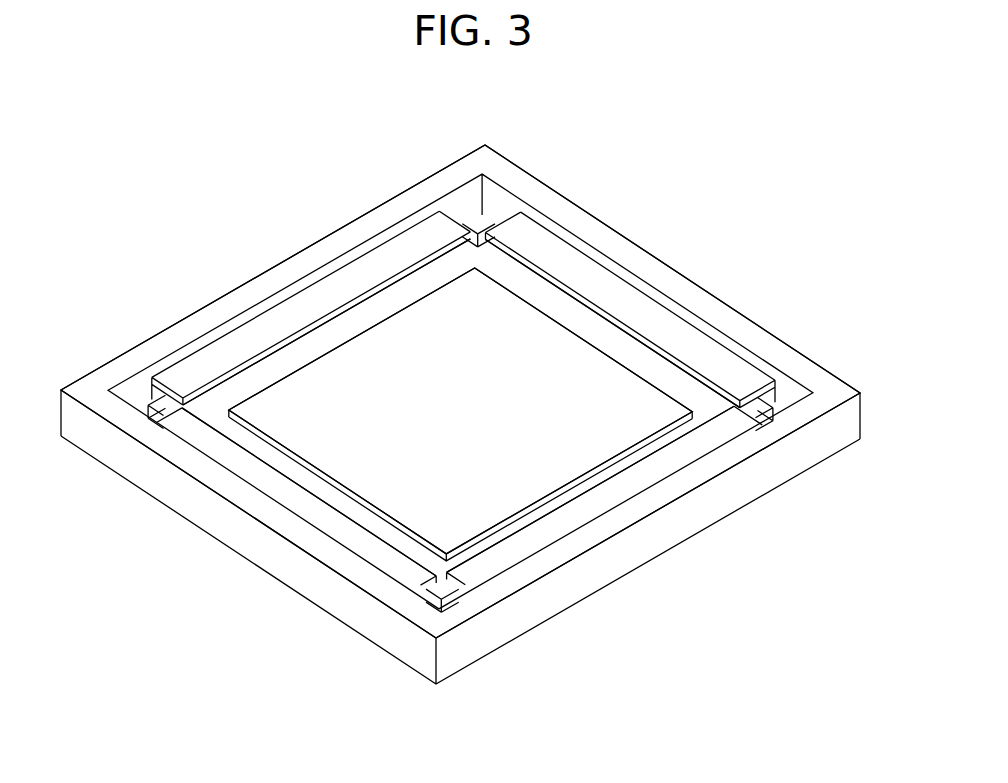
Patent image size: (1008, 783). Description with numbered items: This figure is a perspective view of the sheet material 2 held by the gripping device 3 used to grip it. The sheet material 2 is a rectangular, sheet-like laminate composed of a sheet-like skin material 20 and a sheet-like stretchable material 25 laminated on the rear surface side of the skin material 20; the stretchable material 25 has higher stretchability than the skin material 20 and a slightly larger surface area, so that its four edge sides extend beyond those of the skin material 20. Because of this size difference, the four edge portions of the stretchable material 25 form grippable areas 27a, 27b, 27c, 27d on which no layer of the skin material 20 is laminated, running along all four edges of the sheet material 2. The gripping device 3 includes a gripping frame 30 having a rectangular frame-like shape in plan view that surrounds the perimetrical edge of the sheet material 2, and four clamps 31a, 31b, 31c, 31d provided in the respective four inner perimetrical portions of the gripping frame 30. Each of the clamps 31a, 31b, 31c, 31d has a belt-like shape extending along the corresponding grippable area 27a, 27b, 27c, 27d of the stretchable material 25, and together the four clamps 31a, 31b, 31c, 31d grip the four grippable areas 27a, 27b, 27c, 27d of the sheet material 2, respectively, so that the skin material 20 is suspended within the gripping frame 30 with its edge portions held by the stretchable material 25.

The sheet material 2 is at (518, 256).
The gripping device 3 is at (652, 192).
The skin material 20 is at (468, 300).
The stretchable material 25 is at (482, 245).
The grippable area 27a is at (348, 323).
The grippable area 27b is at (325, 497).
The grippable area 27c is at (550, 507).
The grippable area 27d is at (650, 360).
The gripping frame 30 is at (805, 357).
The clamp 31a is at (275, 325).
The clamp 31b is at (255, 473).
The clamp 31c is at (616, 492).
The clamp 31d is at (705, 357).